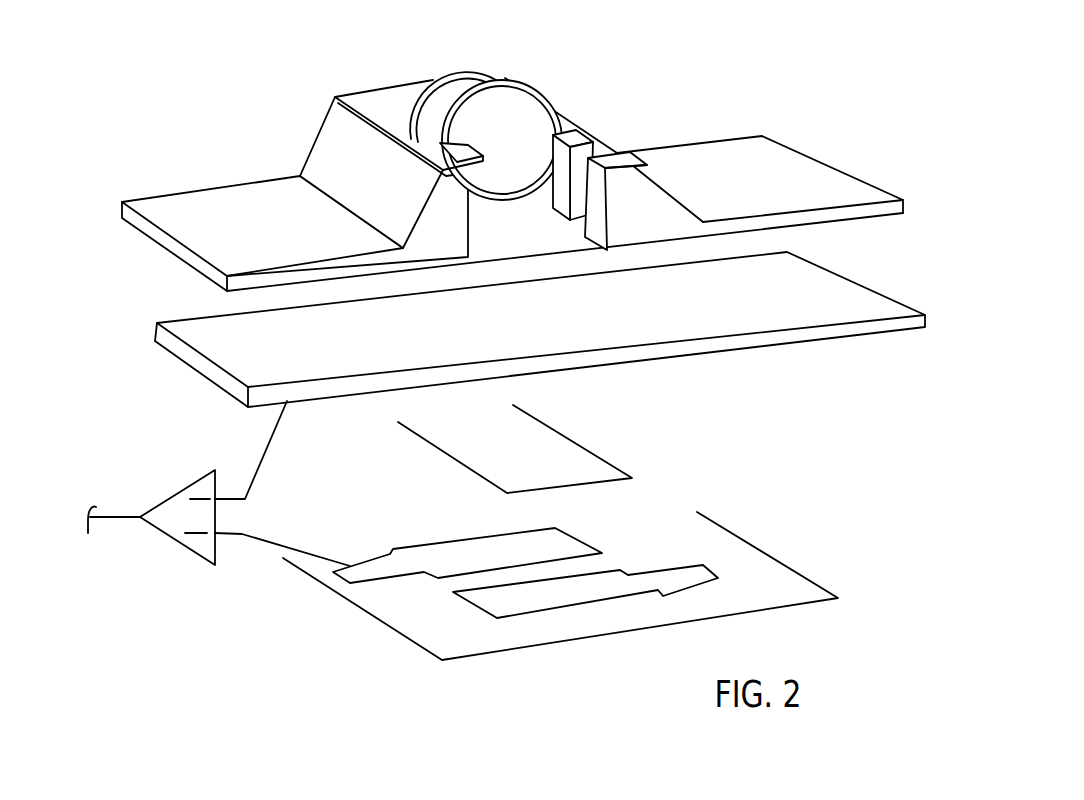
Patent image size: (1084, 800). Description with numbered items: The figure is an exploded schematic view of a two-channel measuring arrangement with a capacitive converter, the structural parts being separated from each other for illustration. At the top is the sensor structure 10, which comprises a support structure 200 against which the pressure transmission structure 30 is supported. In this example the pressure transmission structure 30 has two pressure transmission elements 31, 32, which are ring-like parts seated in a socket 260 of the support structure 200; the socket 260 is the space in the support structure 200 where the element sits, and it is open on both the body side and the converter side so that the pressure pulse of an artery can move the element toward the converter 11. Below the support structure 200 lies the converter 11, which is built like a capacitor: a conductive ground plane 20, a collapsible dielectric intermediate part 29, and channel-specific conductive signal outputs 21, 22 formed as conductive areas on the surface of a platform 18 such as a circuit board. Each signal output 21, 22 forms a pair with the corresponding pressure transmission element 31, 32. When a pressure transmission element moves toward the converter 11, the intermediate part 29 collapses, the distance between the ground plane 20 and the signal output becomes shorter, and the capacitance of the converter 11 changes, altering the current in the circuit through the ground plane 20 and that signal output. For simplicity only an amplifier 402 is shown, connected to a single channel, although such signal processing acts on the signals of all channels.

The sensor structure 10 is at (733, 95).
The support structure 200 is at (354, 100).
The pressure transmission structure 30 is at (511, 106).
The pressure transmission element 31 is at (462, 72).
The pressure transmission element 32 is at (566, 127).
The socket 260 is at (577, 113).
The converter 11 is at (540, 456).
The conductive ground plane 20 is at (651, 359).
The intermediate part 29 is at (583, 462).
The platform 18 is at (772, 567).
The signal output 21 is at (564, 542).
The signal output 22 is at (616, 577).
The amplifier 402 is at (180, 545).